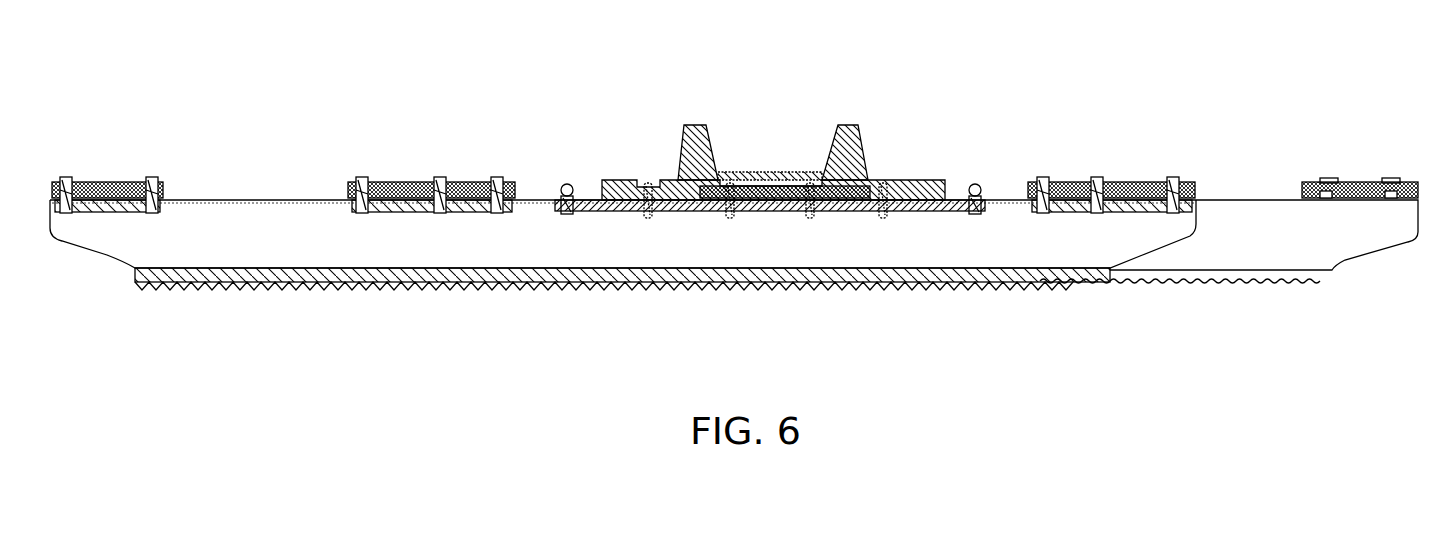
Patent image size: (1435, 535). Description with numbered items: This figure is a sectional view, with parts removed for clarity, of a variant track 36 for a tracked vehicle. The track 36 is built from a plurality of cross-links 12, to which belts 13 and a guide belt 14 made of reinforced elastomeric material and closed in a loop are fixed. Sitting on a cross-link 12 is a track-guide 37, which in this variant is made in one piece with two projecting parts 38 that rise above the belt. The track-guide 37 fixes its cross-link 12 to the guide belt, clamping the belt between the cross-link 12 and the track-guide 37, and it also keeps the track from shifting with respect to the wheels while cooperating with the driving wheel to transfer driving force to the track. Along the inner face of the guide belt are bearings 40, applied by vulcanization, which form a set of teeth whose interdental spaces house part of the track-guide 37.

The cross-link 12 is at (537, 248).
The belt 13 is at (103, 190).
The guide belt 14 is at (773, 210).
The track 36 is at (1302, 110).
The track-guide 37 is at (771, 120).
The projecting part 38 is at (680, 140).
The bearing 40 is at (760, 172).